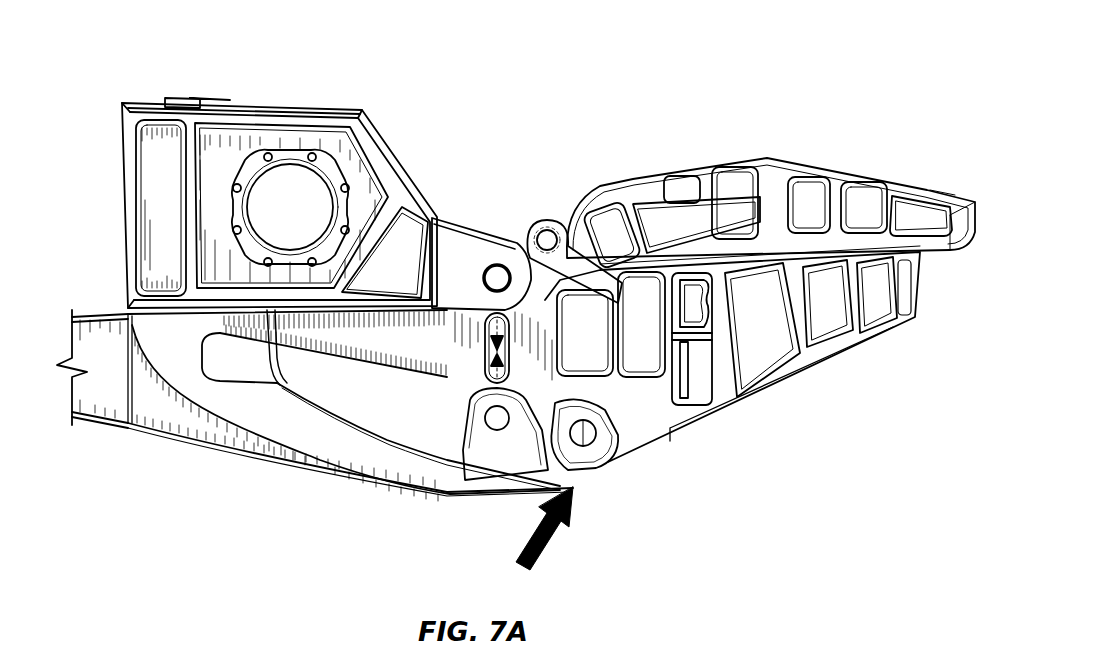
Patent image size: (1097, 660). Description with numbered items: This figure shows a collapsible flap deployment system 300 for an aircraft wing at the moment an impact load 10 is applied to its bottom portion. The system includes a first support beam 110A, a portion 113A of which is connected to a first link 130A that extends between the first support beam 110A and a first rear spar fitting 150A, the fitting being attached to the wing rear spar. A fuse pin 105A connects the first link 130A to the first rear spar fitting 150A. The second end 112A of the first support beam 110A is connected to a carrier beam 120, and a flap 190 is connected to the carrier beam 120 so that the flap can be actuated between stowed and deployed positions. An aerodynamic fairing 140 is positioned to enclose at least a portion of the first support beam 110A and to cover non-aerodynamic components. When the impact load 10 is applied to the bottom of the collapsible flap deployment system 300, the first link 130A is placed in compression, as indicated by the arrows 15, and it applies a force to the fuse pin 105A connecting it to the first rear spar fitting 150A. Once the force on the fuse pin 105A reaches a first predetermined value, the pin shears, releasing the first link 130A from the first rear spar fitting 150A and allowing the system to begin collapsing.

The collapsible flap deployment system 300 is at (800, 36).
The first rear spar fitting 150A is at (221, 140).
The first link 130A is at (475, 325).
The fuse pin 105A is at (500, 266).
The flap 190 is at (820, 192).
The carrier beam 120 is at (767, 355).
The second end 112A is at (603, 447).
The portion of the first support beam 113A is at (480, 450).
The arrows 15 is at (493, 367).
The aerodynamic fairing 140 is at (247, 410).
The first support beam 110A is at (360, 417).
The impact load 10 is at (565, 518).